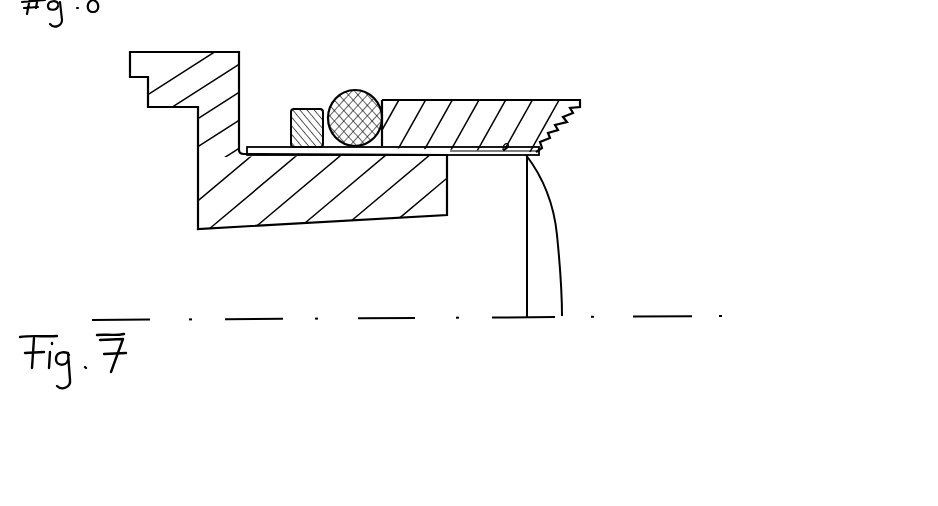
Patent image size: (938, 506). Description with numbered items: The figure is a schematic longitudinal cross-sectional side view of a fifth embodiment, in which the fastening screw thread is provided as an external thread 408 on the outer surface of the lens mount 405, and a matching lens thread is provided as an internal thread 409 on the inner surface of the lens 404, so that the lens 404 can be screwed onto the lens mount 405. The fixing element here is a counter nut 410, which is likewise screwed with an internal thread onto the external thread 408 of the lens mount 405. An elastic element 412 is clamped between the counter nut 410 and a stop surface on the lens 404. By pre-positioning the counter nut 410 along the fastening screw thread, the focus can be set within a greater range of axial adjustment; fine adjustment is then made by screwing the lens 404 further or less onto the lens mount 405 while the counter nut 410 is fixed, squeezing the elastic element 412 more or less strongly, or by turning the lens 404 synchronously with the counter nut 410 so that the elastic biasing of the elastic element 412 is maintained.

The lens 404 is at (515, 123).
The lens mount 405 is at (275, 182).
The external thread 408 is at (279, 154).
The internal thread 409 is at (468, 150).
The counter nut 410 is at (293, 108).
The elastic element 412 is at (362, 90).